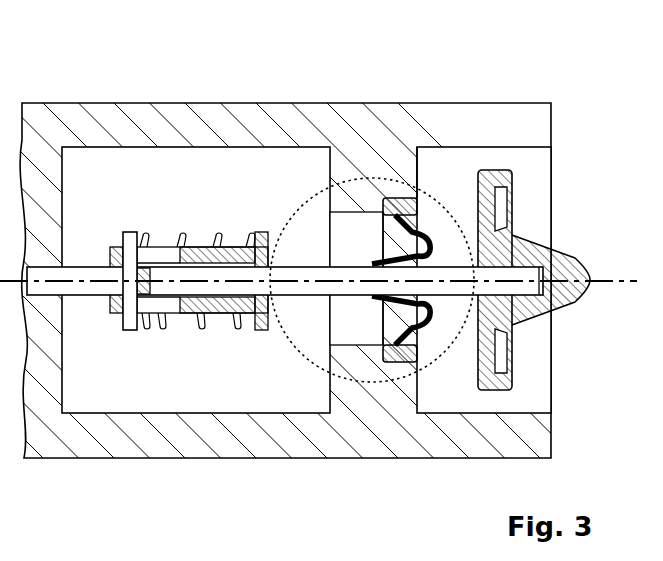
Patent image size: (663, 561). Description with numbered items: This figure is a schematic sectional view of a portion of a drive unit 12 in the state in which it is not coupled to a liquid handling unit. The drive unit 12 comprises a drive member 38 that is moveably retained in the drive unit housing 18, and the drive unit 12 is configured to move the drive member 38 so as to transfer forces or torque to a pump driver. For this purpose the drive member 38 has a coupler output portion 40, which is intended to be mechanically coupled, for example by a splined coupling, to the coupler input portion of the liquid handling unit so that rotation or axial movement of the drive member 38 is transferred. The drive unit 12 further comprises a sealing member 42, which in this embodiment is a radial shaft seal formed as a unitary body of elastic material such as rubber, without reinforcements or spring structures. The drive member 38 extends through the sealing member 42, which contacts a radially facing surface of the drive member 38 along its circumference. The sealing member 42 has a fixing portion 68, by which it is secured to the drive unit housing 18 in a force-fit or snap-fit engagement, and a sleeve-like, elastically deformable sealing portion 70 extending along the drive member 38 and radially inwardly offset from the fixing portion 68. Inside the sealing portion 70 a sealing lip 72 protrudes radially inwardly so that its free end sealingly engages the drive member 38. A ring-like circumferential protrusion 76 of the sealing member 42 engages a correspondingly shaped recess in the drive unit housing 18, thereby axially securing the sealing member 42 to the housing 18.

The drive unit 12 is at (290, 120).
The drive unit housing 18 is at (503, 120).
The drive member 38 is at (440, 271).
The coupler output portion 40 is at (572, 290).
The sealing member 42 is at (417, 198).
The fixing portion 68 is at (397, 200).
The sealing portion 70 is at (387, 306).
The sealing lip 72 is at (370, 262).
The circumferential protrusion 76 is at (392, 362).